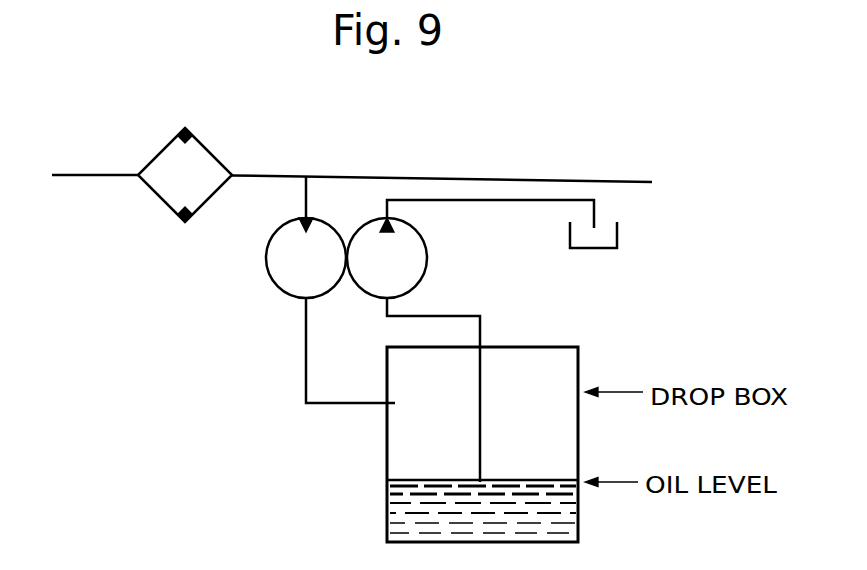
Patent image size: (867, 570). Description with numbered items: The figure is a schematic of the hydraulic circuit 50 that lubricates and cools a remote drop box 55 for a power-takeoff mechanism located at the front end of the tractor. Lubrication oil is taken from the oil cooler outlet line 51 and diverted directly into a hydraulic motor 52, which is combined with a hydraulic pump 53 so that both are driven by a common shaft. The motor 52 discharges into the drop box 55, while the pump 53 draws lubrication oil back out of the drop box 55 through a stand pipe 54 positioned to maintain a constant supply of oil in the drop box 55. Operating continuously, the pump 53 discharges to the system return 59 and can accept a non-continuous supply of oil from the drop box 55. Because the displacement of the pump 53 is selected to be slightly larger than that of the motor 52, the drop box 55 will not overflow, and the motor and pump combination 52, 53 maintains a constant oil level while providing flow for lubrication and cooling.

The hydraulic circuit 50 is at (597, 92).
The oil cooler outlet line 51 is at (383, 177).
The hydraulic motor 52 is at (267, 262).
The hydraulic pump 53 is at (427, 255).
The stand pipe 54 is at (482, 442).
The drop box 55 is at (387, 425).
The system return 59 is at (630, 237).